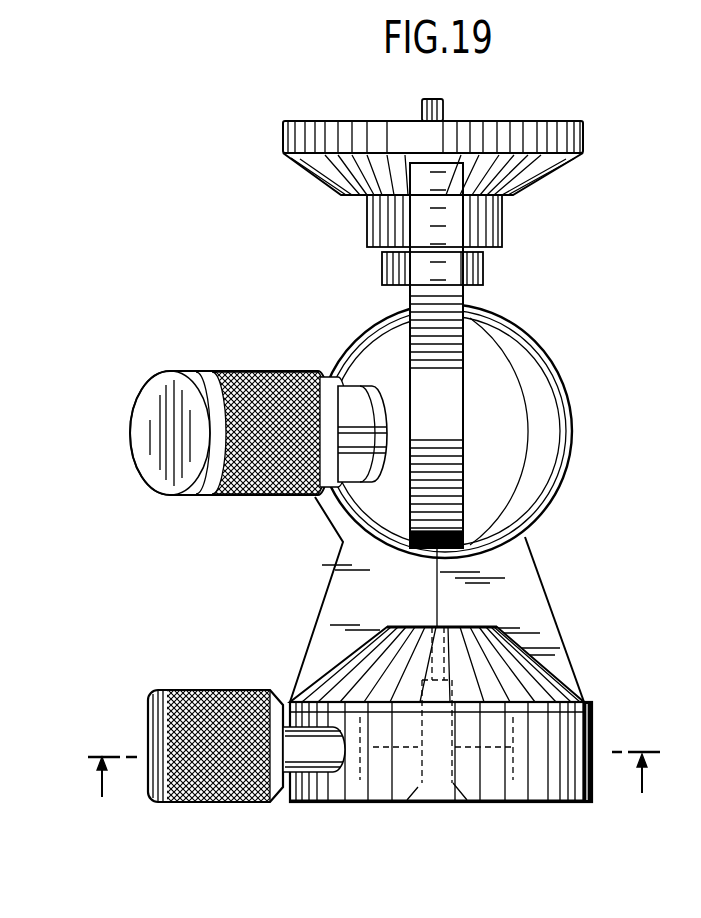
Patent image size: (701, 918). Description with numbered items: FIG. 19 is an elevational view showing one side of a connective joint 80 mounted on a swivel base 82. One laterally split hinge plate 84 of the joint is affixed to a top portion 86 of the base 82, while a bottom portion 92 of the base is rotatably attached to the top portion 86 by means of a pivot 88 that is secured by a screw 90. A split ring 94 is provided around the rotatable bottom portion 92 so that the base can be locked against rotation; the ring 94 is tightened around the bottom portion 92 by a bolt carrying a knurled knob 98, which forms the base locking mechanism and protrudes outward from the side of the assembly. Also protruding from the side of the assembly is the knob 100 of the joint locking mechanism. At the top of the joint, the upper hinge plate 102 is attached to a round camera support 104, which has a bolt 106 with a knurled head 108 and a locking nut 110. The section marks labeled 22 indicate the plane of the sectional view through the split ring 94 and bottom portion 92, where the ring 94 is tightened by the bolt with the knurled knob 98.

The section line 22- 22 is at (374, 797).
The connective joint 80 is at (597, 423).
The swivel base 82 is at (608, 723).
The hinge plate 84 is at (557, 603).
The top portion 86 is at (537, 662).
The pivot 88 is at (427, 620).
The screw 90 is at (443, 803).
The bottom portion 92 is at (503, 803).
The split ring 94 is at (593, 747).
The knurled knob 98 is at (215, 690).
The knob 100 is at (267, 372).
The upper hinge plate 102 is at (445, 298).
The round camera support 104 is at (583, 142).
The bolt 106 is at (450, 118).
The knurled head 108 is at (484, 268).
The locking nut 110 is at (503, 223).